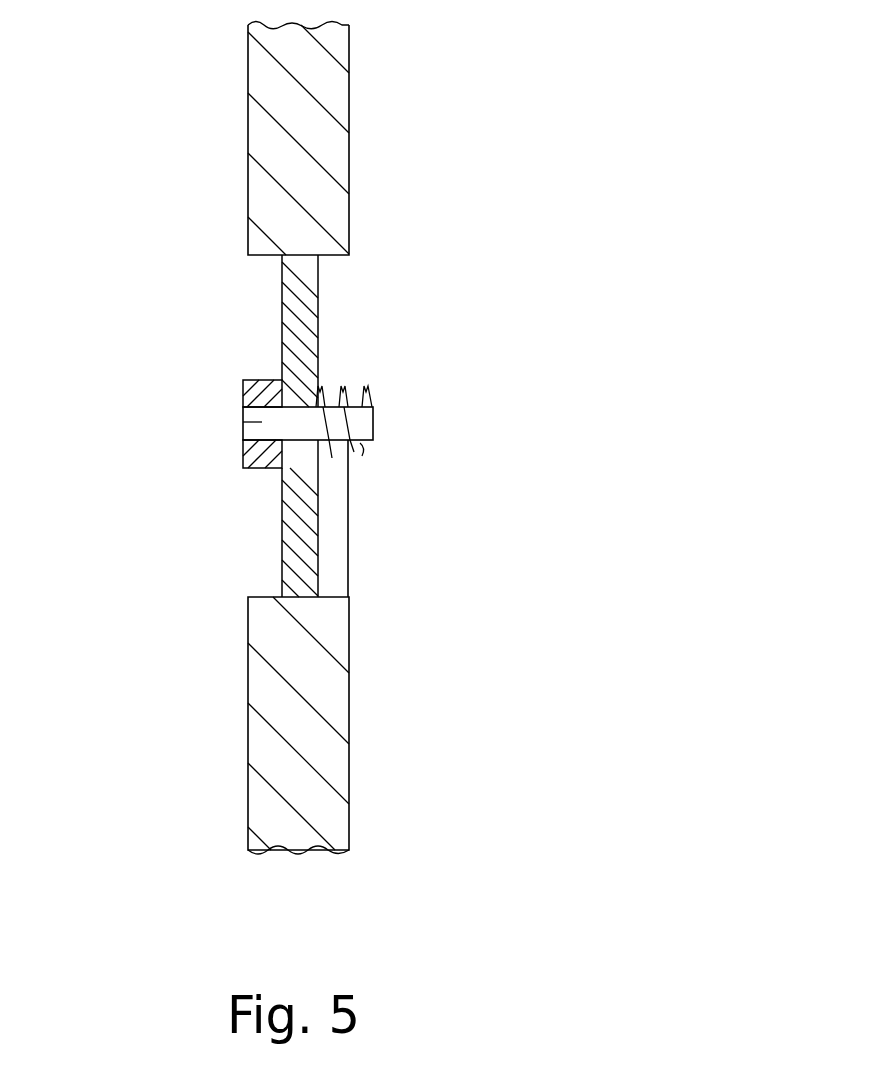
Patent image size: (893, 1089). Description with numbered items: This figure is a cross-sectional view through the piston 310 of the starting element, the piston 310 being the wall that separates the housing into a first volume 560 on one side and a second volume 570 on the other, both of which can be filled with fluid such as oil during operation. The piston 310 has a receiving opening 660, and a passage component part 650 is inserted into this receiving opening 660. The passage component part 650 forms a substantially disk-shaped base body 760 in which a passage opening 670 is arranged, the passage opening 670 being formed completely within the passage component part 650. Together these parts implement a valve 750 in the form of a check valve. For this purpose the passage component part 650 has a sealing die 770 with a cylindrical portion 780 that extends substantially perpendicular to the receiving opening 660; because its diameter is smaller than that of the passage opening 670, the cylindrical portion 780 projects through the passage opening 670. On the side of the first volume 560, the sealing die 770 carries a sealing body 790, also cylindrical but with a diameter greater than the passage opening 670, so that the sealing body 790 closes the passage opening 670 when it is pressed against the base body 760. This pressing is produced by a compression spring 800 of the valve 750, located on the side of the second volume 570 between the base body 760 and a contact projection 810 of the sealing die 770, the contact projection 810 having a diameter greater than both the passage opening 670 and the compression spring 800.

The piston 310 is at (352, 88).
The passage component part 650 is at (297, 302).
The receiving opening 660 is at (270, 282).
The passage opening 670 is at (312, 387).
The valve 750 is at (388, 429).
The base body 760 is at (282, 350).
The sealing die 770 is at (243, 395).
The cylindrical portion 780 is at (243, 422).
The sealing body 790 is at (243, 466).
The compression spring 800 is at (356, 447).
The contact projection 810 is at (366, 456).
The first volume 560 is at (169, 629).
The second volume 570 is at (557, 639).